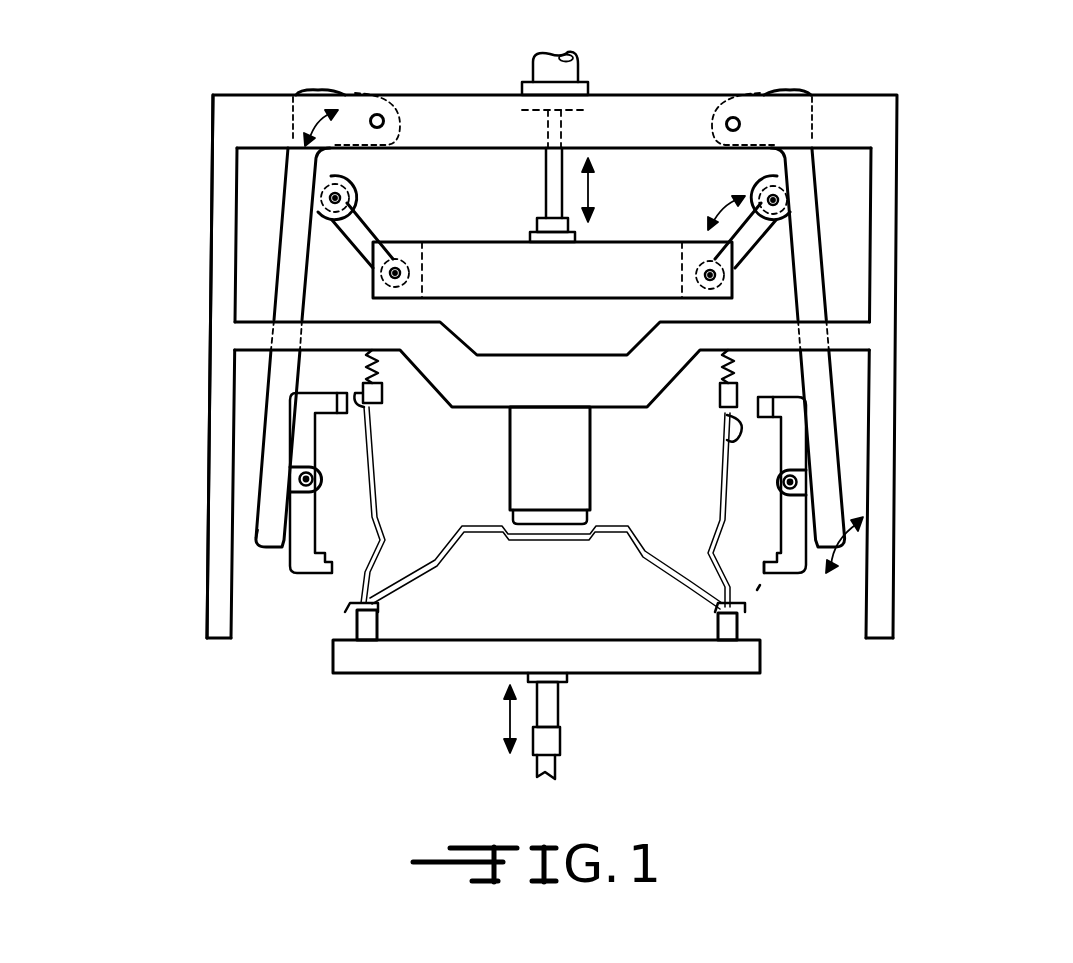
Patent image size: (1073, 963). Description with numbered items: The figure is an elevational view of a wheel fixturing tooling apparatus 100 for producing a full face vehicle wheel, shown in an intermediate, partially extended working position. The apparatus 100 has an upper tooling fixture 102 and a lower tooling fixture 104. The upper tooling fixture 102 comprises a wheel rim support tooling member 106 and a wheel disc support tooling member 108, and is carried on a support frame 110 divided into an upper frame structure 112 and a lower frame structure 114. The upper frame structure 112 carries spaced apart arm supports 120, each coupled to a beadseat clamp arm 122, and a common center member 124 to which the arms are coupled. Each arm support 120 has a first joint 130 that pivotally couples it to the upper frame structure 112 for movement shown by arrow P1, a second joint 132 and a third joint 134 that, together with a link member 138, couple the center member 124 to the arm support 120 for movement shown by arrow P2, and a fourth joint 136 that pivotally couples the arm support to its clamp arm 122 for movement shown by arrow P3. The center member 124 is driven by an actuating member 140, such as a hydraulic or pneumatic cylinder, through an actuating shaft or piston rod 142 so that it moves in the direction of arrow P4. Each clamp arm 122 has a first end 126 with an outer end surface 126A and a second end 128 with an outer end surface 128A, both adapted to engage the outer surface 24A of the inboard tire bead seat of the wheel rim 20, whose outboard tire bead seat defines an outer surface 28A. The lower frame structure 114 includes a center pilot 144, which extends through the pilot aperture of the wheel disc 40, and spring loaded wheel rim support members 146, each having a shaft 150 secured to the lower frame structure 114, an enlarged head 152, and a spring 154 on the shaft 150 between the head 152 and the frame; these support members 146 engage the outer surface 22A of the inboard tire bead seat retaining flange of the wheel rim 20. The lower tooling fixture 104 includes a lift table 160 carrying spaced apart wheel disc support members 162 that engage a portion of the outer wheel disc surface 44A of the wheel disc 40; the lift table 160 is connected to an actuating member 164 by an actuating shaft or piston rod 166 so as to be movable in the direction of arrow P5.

The wheel fixturing tooling apparatus 100 is at (968, 182).
The upper tooling fixture 102 is at (899, 92).
The lower tooling fixture 104 is at (327, 718).
The wheel rim support tooling member 106 is at (250, 550).
The wheel disc support tooling member 108 is at (541, 345).
The support frame 110 is at (206, 216).
The upper frame structure 112 is at (458, 118).
The lower frame structure 114 is at (272, 312).
The arm support 120 is at (300, 268).
The beadseat clamp arm 122 is at (780, 534).
The center member 124 is at (466, 248).
The first end 126 is at (778, 590).
The outer end surface 126A is at (758, 592).
The second end 128 is at (760, 403).
The outer end surface 128A is at (770, 438).
The first joint 130 is at (388, 112).
The second joint 132 is at (346, 185).
The third joint 134 is at (405, 262).
The fourth joint 136 is at (292, 481).
The link member 138 is at (360, 222).
The actuating member 140 is at (556, 56).
The actuating shaft 142 is at (545, 195).
The center pilot 144 is at (585, 487).
The wheel rim support member 146 is at (708, 392).
The shaft 150 is at (362, 366).
The enlarged head 152 is at (383, 400).
The spring 154 is at (372, 380).
The lift table 160 is at (735, 665).
The wheel disc support member 162 is at (380, 622).
The actuating member 164 is at (530, 750).
The actuating shaft 166 is at (552, 710).
The wheel rim 20 is at (392, 512).
The outer surface of inboard tire bead seat retaining flange 22A is at (326, 412).
The inboard tire bead seat outer surface 24A is at (722, 441).
The outboard tire bead seat outer surface 28A is at (742, 600).
The wheel disc 40 is at (445, 576).
The outer wheel disc surface 44A is at (357, 620).
The arrow P1 is at (300, 110).
The arrow P2 is at (722, 205).
The arrow P3 is at (862, 540).
The arrow P4 is at (592, 205).
The arrow P5 is at (506, 720).